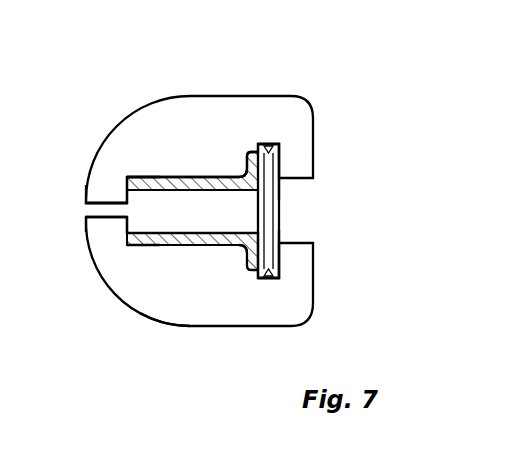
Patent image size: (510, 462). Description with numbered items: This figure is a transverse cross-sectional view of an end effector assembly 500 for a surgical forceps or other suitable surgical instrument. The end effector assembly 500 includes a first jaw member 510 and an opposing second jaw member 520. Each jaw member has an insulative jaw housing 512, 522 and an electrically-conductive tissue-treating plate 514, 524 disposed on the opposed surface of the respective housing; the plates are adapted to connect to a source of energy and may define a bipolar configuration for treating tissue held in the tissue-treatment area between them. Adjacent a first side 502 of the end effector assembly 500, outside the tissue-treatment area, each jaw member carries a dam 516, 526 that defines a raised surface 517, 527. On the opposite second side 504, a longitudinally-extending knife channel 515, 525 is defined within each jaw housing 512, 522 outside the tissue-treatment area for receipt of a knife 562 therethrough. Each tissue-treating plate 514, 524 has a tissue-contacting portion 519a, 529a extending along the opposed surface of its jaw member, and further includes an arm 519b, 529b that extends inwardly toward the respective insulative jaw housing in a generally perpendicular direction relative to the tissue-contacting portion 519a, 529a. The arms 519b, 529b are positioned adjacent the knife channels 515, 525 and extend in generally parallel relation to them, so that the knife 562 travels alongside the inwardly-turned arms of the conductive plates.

The end effector assembly 500 is at (295, 66).
The first side 502 is at (77, 221).
The second side 504 is at (329, 190).
The first jaw member 510 is at (103, 117).
The insulative jaw housing 512 is at (145, 105).
The tissue-treating plate 514 is at (188, 177).
The knife channel 515 is at (279, 167).
The dam 516 is at (100, 192).
The raised surface 517 is at (114, 207).
The tissue-contacting portion 519a is at (150, 177).
The arm 519b is at (247, 162).
The second jaw member 520 is at (118, 312).
The insulative jaw housing 522 is at (160, 307).
The tissue-treating plate 524 is at (207, 246).
The knife channel 525 is at (279, 264).
The dam 526 is at (100, 231).
The raised surface 527 is at (85, 214).
The tissue-contacting portion 529a is at (150, 246).
The arm 529b is at (247, 262).
The knife 562 is at (279, 210).